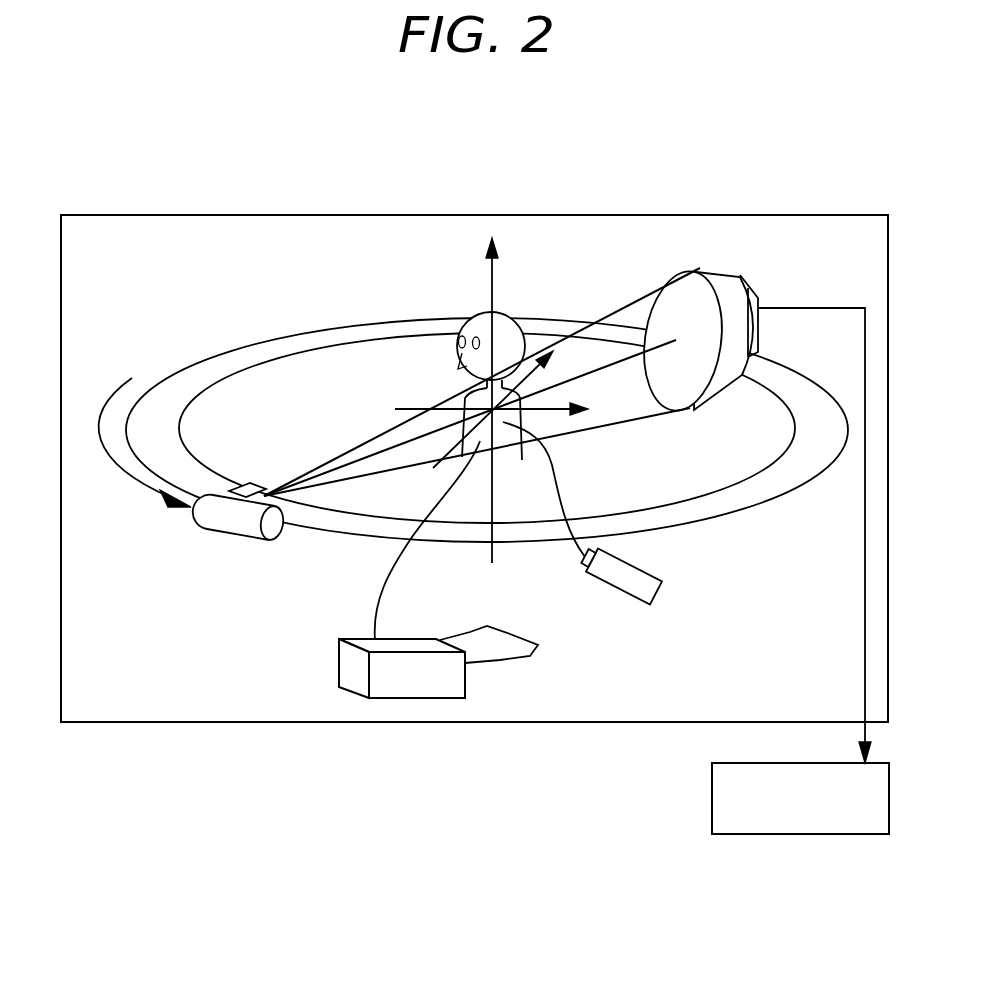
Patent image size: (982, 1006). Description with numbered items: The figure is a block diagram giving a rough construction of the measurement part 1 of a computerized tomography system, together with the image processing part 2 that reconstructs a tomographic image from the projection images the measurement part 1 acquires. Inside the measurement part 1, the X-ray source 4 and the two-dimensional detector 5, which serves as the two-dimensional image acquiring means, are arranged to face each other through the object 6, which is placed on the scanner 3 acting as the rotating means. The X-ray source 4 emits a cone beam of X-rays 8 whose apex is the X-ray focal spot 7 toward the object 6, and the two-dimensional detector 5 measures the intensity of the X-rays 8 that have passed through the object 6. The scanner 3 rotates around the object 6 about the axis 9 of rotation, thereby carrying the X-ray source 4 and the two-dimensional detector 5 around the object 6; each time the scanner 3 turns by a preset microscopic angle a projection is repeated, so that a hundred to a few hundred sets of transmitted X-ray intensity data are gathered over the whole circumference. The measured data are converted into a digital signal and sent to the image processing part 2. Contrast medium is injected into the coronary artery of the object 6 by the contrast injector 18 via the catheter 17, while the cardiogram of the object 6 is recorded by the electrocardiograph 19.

The measurement part 1 is at (574, 215).
The image processing part 2 is at (712, 800).
The scanner 3 is at (717, 516).
The X-ray source 4 is at (277, 540).
The two-dimensional detector 5 is at (765, 292).
The object 6 is at (478, 310).
The X-ray focal spot 7 is at (228, 510).
The X-rays 8 is at (598, 300).
The axis of rotation 9 is at (492, 555).
The catheter 17 is at (557, 485).
The contrast injector 18 is at (585, 572).
The electrocardiograph 19 is at (339, 664).